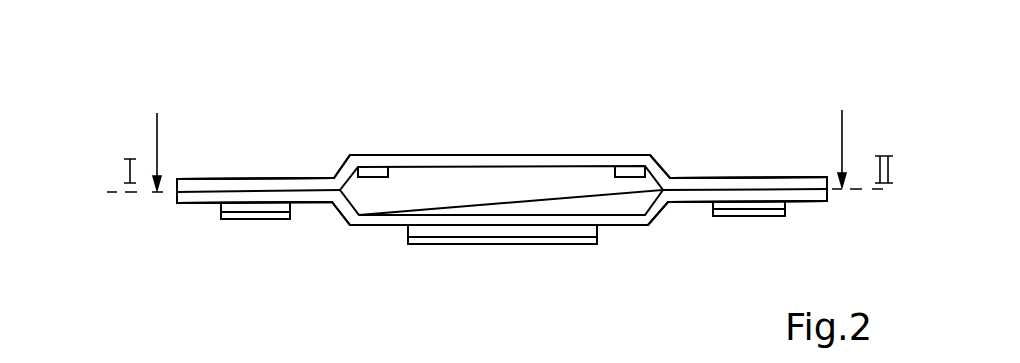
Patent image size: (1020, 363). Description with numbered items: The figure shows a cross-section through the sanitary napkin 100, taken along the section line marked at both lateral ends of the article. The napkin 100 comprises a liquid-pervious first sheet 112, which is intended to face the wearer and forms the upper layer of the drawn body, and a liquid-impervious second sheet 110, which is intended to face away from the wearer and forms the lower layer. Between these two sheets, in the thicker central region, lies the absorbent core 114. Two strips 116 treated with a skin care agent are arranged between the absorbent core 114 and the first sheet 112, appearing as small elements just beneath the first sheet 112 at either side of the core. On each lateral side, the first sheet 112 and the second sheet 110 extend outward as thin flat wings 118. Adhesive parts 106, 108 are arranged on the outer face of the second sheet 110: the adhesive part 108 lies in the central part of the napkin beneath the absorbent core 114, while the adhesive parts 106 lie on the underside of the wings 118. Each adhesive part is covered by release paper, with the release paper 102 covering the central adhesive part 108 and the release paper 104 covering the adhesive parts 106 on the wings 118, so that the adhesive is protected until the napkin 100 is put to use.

The sanitary napkin 100 is at (672, 177).
The release paper 102 is at (565, 240).
The release paper 104 is at (243, 217).
The adhesive part 106 is at (268, 208).
The adhesive part 108 is at (438, 232).
The second sheet 110 is at (323, 202).
The first sheet 112 is at (318, 180).
The absorbent core 114 is at (448, 190).
The strips 116 is at (627, 168).
The wings 118 is at (247, 180).